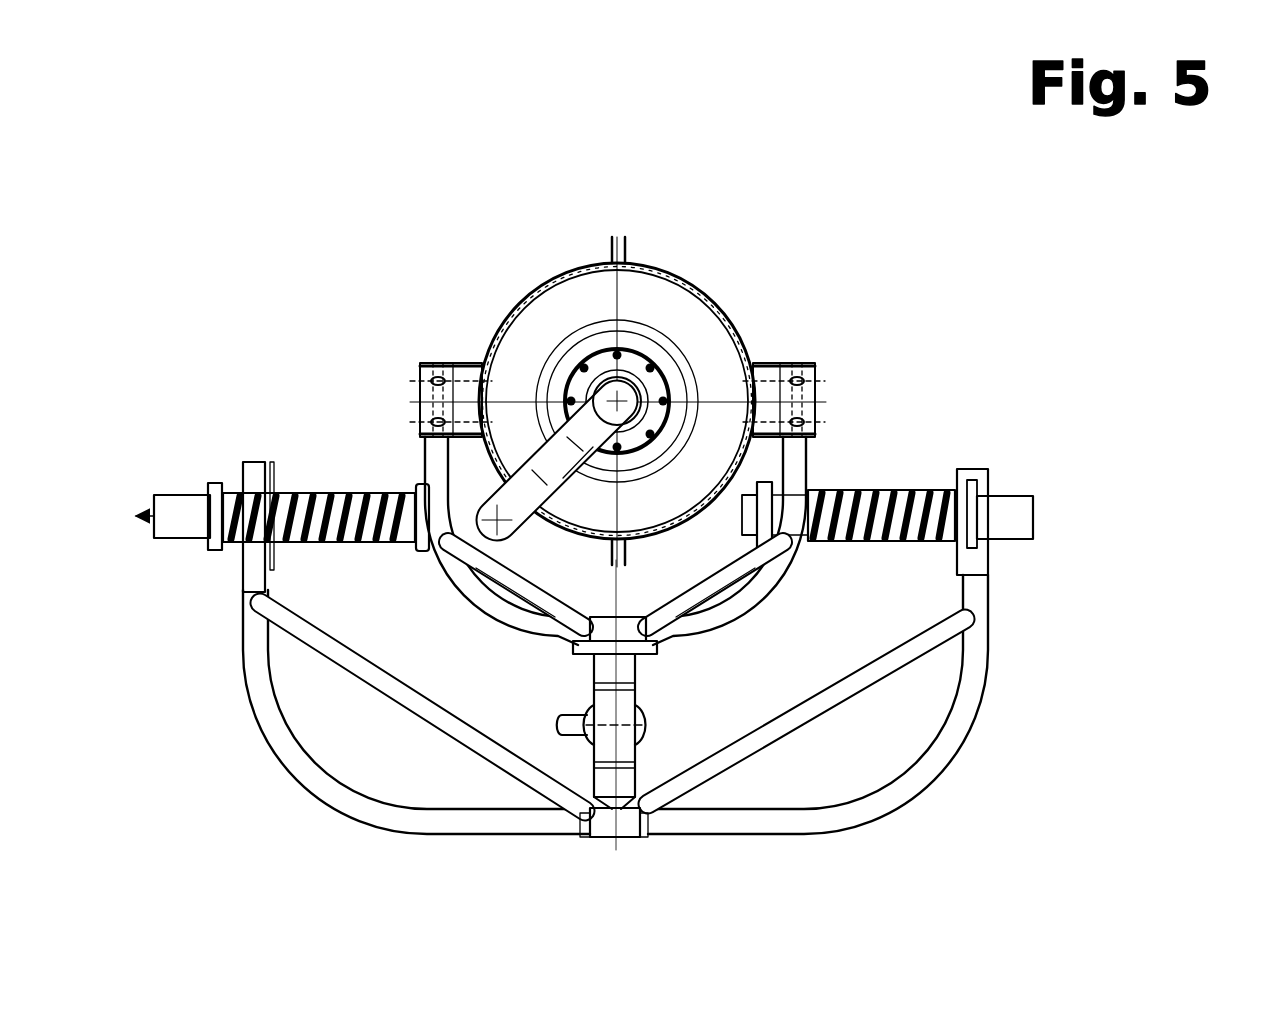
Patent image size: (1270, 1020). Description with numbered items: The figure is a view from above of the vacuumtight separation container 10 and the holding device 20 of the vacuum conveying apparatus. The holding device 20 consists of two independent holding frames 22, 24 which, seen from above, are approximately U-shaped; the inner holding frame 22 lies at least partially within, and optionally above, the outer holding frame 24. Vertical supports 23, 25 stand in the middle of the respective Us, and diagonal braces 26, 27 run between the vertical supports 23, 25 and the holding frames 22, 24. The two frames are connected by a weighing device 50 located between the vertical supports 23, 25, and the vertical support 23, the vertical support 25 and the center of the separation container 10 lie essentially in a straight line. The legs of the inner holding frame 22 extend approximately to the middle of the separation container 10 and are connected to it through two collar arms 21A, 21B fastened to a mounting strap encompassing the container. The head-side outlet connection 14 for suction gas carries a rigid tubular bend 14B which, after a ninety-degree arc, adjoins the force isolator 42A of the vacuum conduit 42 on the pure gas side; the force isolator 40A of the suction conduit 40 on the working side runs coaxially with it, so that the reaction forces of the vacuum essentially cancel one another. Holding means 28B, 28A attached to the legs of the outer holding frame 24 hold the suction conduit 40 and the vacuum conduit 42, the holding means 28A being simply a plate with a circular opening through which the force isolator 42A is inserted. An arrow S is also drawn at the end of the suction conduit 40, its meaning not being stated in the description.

The separation container 10 is at (618, 365).
The outlet connection 14 is at (655, 378).
The tubular bend 14B is at (528, 527).
The holding device 20 is at (1066, 384).
The collar arm 21A is at (815, 372).
The collar arm 21B is at (420, 363).
The holding frame 22 is at (812, 460).
The vertical support 23 is at (648, 648).
The holding frame 24 is at (852, 835).
The vertical support 25 is at (615, 840).
The diagonal brace 26 is at (552, 622).
The diagonal brace 27 is at (423, 720).
The holding means 28A is at (274, 477).
The holding means 28B is at (978, 463).
The suction conduit 40 is at (918, 435).
The force isolator 40A is at (876, 488).
The vacuum conduit 42 is at (282, 439).
The force isolator 42A is at (343, 543).
The weighing device 50 is at (648, 720).
The direction of movement S is at (1046, 516).